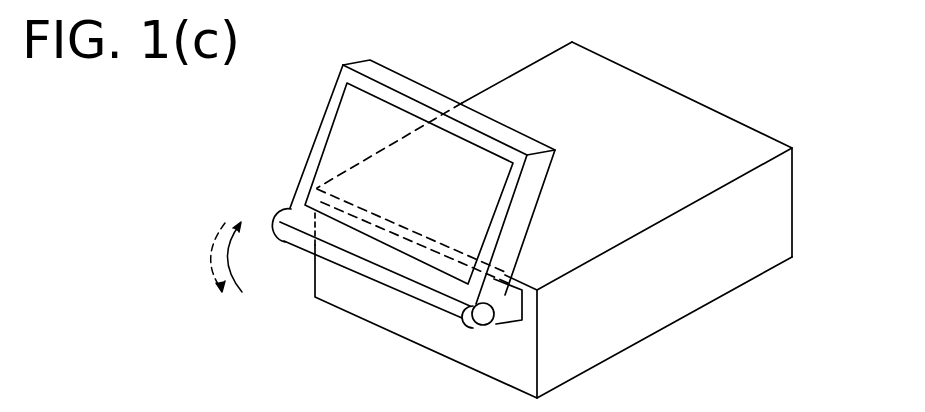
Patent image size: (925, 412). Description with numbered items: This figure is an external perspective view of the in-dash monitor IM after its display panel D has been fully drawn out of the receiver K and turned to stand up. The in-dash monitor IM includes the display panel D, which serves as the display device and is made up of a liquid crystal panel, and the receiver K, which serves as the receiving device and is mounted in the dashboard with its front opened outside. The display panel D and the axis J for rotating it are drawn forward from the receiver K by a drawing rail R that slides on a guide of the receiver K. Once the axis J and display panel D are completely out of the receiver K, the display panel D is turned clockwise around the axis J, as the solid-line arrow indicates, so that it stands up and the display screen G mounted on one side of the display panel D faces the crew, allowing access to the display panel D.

The display panel D is at (380, 168).
The display screen G is at (342, 125).
The axis J is at (471, 334).
The drawing rail R is at (504, 329).
The receiver K is at (762, 277).
The in-dash monitor IM is at (772, 347).